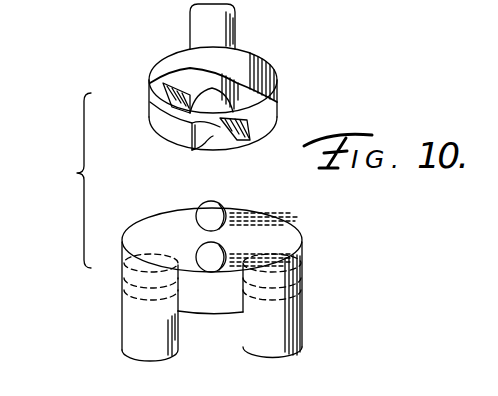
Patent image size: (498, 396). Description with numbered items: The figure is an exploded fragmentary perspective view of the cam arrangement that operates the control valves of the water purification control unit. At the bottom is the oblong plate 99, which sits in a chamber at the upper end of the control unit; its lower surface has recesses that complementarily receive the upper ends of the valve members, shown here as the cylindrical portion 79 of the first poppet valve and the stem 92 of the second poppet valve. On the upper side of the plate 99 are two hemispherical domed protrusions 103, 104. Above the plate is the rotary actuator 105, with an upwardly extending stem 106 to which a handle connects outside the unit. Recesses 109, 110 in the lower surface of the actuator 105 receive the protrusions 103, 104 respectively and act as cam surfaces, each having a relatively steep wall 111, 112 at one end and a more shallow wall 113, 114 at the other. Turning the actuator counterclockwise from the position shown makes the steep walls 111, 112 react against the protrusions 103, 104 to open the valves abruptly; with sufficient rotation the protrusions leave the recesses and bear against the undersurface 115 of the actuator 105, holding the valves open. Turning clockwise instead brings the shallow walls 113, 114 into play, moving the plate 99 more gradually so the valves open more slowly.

The stem 106 is at (190, 13).
The recess 109 is at (203, 70).
The steep wall 111 is at (235, 81).
The shallow wall 113 is at (176, 90).
The rotary actuator 105 is at (281, 87).
The undersurface 115 is at (151, 120).
The shallow wall 114 is at (247, 136).
The steep wall 112 is at (192, 147).
The recess 110 is at (213, 136).
The domed protrusion 104 is at (224, 206).
The domed protrusion 103 is at (207, 250).
The oblong plate 99 is at (290, 237).
The cylindrical portion 79 is at (131, 332).
The stem 92 is at (297, 327).